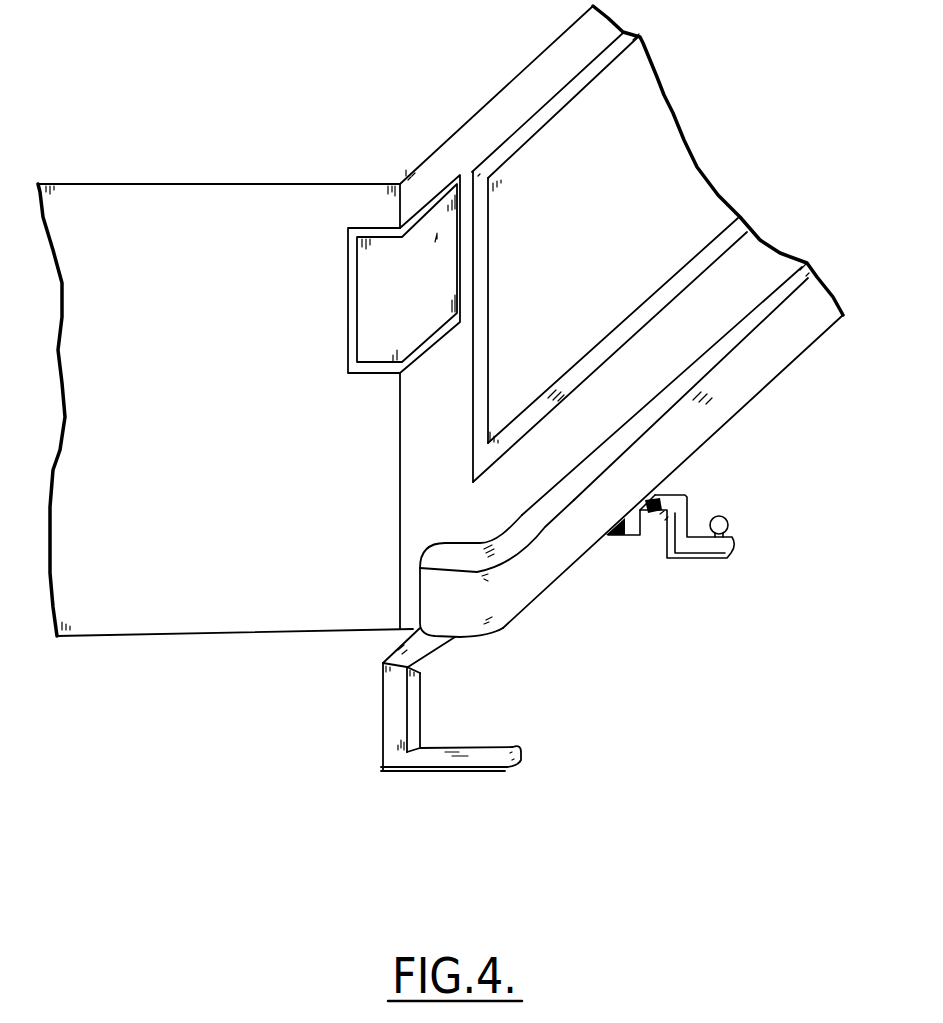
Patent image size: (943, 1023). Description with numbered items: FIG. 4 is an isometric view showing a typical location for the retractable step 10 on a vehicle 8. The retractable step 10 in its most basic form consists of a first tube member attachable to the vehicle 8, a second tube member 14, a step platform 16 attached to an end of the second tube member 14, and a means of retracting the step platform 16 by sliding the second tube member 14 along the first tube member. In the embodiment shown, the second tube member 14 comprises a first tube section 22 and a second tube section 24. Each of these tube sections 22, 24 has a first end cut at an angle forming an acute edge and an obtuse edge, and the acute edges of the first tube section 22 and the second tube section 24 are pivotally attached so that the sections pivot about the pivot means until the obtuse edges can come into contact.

The vehicle 8 is at (723, 172).
The retractable step 10 is at (587, 667).
The second tube member 14 is at (398, 743).
The step platform 16 is at (485, 760).
The first tube section 22 is at (430, 652).
The second tube section 24 is at (397, 728).